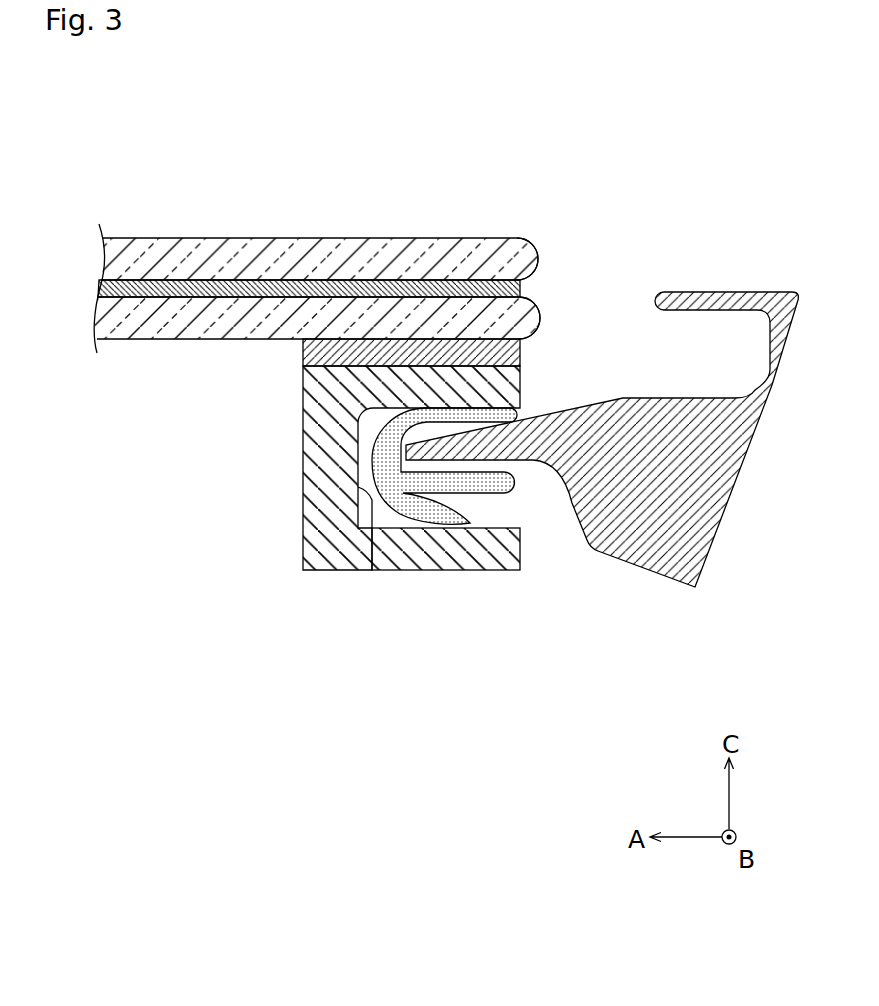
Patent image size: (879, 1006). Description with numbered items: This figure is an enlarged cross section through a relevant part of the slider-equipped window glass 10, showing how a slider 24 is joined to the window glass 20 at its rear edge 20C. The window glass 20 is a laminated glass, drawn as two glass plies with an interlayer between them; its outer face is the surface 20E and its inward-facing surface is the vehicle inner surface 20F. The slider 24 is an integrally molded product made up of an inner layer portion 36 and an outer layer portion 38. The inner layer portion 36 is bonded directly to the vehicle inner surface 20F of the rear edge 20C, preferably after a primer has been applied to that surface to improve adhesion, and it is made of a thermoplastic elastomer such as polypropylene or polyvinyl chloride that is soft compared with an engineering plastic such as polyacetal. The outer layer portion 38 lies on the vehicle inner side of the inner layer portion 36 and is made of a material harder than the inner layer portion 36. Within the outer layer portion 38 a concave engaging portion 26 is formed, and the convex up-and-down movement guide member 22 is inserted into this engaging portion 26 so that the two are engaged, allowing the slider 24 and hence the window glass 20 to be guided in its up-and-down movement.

The slider-equipped window glass 10 is at (343, 142).
The window glass 20 is at (190, 235).
The outer surface of panel 20E is at (412, 238).
The vehicle inner surface 20F is at (207, 339).
The rear edge 20C is at (539, 259).
The up-and-down movement guide member 22 is at (450, 496).
The slider 24 is at (292, 450).
The engaging portion 26 is at (372, 528).
The inner layer portion 36 is at (521, 355).
The outer layer portion 38 is at (468, 571).